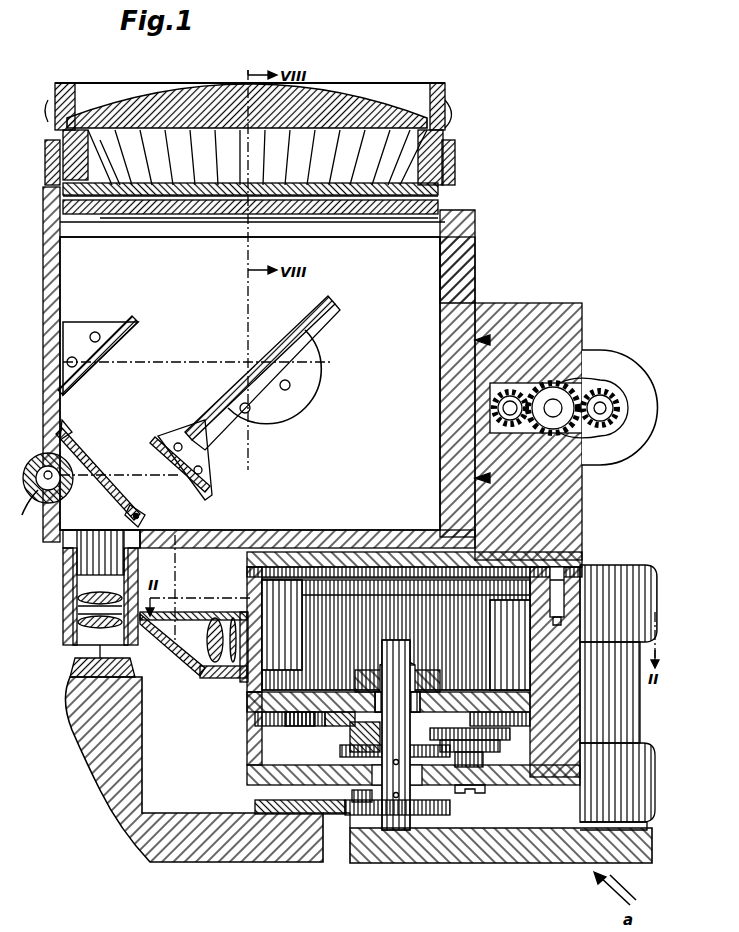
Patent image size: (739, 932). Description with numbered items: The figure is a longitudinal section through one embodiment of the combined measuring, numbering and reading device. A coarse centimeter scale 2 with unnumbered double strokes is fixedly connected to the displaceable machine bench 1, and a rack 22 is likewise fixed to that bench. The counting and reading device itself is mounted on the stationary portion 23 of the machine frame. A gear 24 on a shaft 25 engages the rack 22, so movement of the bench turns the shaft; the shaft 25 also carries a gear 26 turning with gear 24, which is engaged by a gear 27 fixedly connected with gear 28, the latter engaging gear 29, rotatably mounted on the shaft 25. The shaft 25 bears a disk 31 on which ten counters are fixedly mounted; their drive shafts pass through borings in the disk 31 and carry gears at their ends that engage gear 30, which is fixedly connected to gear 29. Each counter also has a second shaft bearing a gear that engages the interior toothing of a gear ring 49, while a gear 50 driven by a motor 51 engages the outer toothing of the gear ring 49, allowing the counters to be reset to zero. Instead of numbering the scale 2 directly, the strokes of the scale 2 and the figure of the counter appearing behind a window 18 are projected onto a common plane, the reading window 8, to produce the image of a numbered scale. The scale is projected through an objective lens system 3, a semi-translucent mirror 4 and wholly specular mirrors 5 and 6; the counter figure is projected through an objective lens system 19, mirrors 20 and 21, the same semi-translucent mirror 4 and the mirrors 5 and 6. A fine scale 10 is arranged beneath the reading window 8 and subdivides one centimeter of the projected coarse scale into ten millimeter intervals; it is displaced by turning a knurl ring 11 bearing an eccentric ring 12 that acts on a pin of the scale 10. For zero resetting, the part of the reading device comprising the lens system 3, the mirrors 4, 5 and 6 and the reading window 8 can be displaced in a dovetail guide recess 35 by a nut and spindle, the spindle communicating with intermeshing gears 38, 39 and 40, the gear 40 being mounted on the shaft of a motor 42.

The displaceable machine bench 1 is at (92, 764).
The coarse centimeter scale 2 is at (72, 668).
The objective lens system 3 is at (72, 610).
The semi-translucent mirror 4 is at (80, 452).
The wholly specular mirror 5 is at (135, 338).
The wholly specular mirror 6 is at (298, 322).
The reading window 8 is at (326, 200).
The fine scale 10 is at (332, 214).
The knurl ring 11 is at (449, 117).
The eccentric ring 12 is at (455, 150).
The window 18 is at (240, 690).
The objective lens system 19 is at (208, 678).
The mirror 20 is at (172, 668).
The mirror 21 is at (152, 460).
The rack 22 is at (255, 806).
The stationary portion of the machine frame 23 is at (505, 863).
The gear 24 is at (452, 808).
The shaft 25 is at (390, 780).
The gear 26 is at (352, 797).
The gear 27 is at (500, 765).
The gear 28 is at (512, 745).
The gear 29 is at (340, 750).
The gear 30 is at (350, 730).
The disk 31 is at (280, 700).
The dovetail guide recess 35 is at (488, 320).
The gear 38 is at (512, 392).
The gear 39 is at (570, 392).
The gear 40 is at (606, 420).
The motor 42 is at (622, 365).
The gear ring 49 is at (247, 562).
The gear 50 is at (560, 575).
The motor 51 is at (622, 575).